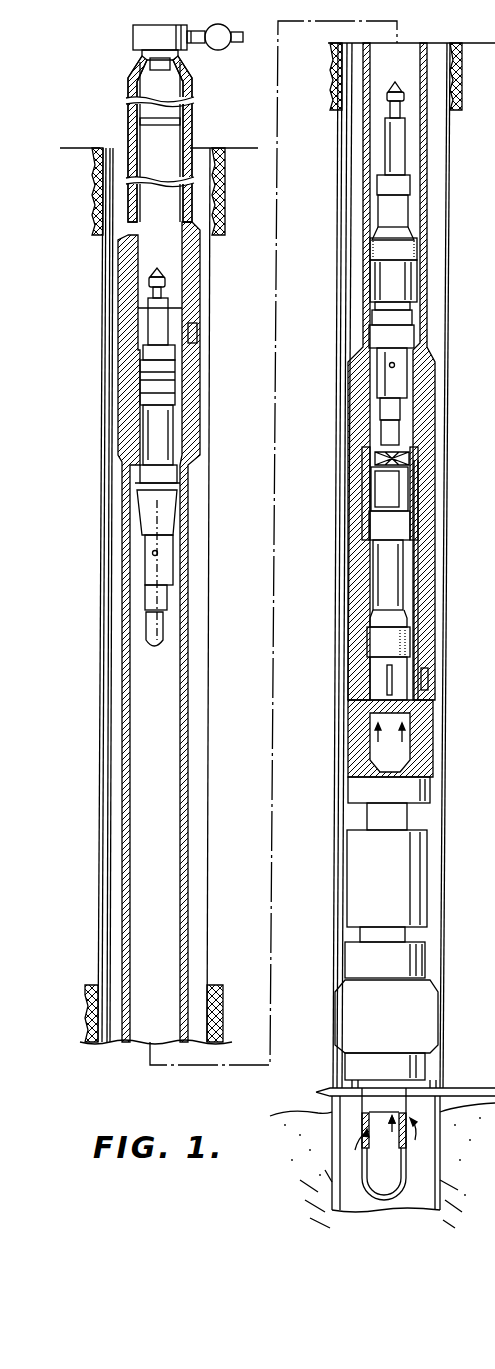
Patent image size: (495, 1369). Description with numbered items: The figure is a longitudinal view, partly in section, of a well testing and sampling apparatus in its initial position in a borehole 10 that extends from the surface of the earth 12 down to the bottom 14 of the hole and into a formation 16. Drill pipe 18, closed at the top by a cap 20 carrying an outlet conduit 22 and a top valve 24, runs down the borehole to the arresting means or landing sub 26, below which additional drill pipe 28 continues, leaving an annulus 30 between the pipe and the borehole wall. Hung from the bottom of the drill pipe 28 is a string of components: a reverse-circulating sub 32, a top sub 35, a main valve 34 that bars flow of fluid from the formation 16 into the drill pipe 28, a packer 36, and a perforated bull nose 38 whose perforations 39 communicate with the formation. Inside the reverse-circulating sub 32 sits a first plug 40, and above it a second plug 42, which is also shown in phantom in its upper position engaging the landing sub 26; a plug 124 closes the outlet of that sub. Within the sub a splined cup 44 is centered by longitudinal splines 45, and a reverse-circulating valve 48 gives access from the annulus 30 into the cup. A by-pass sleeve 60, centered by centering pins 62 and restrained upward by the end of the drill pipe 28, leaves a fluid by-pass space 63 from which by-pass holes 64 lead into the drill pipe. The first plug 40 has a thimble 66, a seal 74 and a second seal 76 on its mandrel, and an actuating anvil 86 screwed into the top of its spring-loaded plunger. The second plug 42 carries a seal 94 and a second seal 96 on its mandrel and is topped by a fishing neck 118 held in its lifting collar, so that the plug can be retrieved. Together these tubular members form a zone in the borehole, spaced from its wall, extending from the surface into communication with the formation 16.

The borehole 10 is at (207, 183).
The surface of the earth 12 is at (100, 148).
The bottom of the hole 14 is at (340, 1212).
The formation 16 is at (318, 1128).
The drill pipe 18 is at (189, 131).
The cap 20 is at (142, 40).
The outlet conduit 22 is at (236, 43).
The top valve 24 is at (220, 50).
The landing sub 26 is at (197, 323).
The drill pipe 28 is at (187, 693).
The annulus 30 is at (195, 826).
The reverse-circulating sub 32 is at (439, 548).
The main valve 34 is at (416, 906).
The top sub 35 is at (431, 766).
The packer 36 is at (420, 1015).
The perforated bull nose 38 is at (410, 1184).
The perforations 39 is at (368, 1119).
The first plug 40 is at (406, 578).
The second plug 42 is at (172, 452).
The splined cup 44 is at (378, 683).
The longitudinal splines 45 is at (368, 699).
The reverse-circulating valve 48 is at (439, 688).
The by-pass sleeve 60 is at (415, 609).
The centering pins 62 is at (421, 799).
The fluid by-pass space 63 is at (416, 499).
The by-pass holes 64 is at (366, 458).
The thimble 66 is at (381, 479).
The seal 74 is at (374, 549).
The second seal 76 is at (413, 655).
The actuating anvil 86 is at (412, 462).
The seal 94 is at (413, 251).
The second seal 96 is at (406, 335).
The fishing neck 118 is at (148, 325).
The plug 124 is at (197, 345).